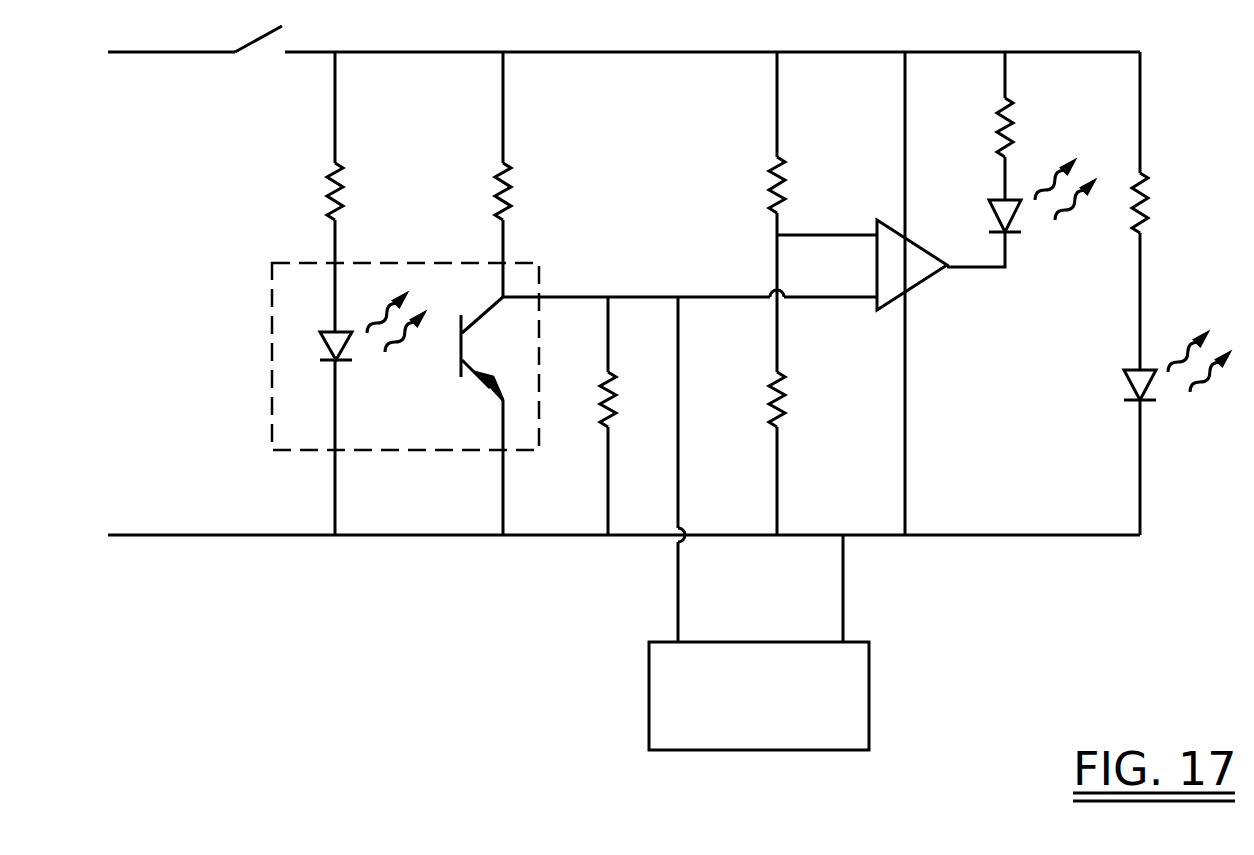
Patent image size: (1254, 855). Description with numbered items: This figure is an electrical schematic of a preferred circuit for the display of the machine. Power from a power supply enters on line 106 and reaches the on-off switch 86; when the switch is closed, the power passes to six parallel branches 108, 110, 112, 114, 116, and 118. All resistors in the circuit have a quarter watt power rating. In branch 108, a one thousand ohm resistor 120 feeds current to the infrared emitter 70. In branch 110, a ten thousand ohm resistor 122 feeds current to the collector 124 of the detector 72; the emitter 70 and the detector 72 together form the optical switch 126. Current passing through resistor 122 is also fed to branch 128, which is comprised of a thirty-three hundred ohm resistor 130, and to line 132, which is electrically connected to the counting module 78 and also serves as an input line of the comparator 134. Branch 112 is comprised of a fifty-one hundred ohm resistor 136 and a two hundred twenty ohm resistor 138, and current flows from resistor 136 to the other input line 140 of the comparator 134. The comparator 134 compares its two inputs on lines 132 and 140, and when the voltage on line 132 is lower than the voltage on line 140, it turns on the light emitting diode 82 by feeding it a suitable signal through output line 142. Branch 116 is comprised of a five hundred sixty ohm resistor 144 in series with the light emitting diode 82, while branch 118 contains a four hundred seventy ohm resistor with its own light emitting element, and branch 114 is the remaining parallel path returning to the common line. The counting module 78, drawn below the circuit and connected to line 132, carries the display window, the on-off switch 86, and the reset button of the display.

The line 106 is at (157, 52).
The on-off switch 86 is at (258, 54).
The parallel branch 108 is at (336, 92).
The parallel branch 110 is at (502, 92).
The parallel branch 112 is at (776, 96).
The parallel branch 114 is at (905, 96).
The parallel branch 116 is at (1002, 66).
The line 118 is at (1140, 100).
The resistor 120 is at (344, 185).
The resistor 122 is at (510, 185).
The collector 124 is at (486, 308).
The optical switch 126 is at (270, 388).
The infrared emitter 70 is at (330, 349).
The detector 72 is at (460, 355).
The branch 128 is at (608, 333).
The resistor 130 is at (602, 410).
The line 132 is at (820, 300).
The comparator 134 is at (918, 282).
The resistor 136 is at (784, 184).
The resistor 138 is at (786, 404).
The input line 140 is at (846, 236).
The output line 142 is at (998, 268).
The resistor 144 is at (1014, 128).
The light emitting diode 82 is at (990, 216).
The counting module 78 is at (649, 674).